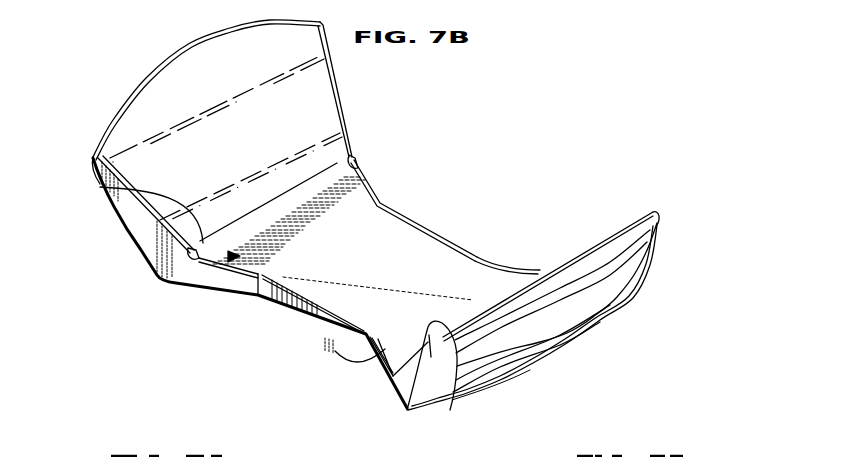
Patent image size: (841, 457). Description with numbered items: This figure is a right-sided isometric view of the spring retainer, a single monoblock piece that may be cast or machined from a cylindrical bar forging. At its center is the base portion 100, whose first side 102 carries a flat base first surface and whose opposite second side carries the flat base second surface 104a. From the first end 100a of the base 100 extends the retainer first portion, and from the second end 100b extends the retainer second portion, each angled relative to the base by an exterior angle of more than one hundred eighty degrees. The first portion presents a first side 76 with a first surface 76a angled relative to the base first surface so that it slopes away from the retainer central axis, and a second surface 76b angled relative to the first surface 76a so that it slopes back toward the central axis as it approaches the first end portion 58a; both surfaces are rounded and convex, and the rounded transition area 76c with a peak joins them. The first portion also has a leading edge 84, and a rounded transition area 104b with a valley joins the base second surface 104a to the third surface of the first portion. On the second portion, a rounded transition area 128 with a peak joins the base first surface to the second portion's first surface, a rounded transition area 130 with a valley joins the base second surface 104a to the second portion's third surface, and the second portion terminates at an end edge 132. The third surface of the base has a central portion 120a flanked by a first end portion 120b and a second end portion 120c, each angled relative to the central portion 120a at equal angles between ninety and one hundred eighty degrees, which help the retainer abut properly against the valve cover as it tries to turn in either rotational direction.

The end edge 132 is at (152, 72).
The rounded transition area 130 is at (100, 187).
The rounded transition area 128 is at (157, 278).
The base portion 100 is at (424, 260).
The first end of the base 100a is at (460, 275).
The second end of the base 100b is at (217, 270).
The first side of the base 102 is at (266, 310).
The base second surface 104a is at (350, 228).
The rounded transition area 104b is at (335, 352).
The central portion 120a is at (293, 320).
The first end portion 120b is at (374, 368).
The second end portion 120c is at (240, 283).
The leading edge 84 is at (431, 413).
The first end portion 58a is at (645, 257).
The first side 76 is at (545, 373).
The first surface 76a is at (478, 373).
The second surface 76b is at (603, 253).
The transition area 76c is at (538, 323).